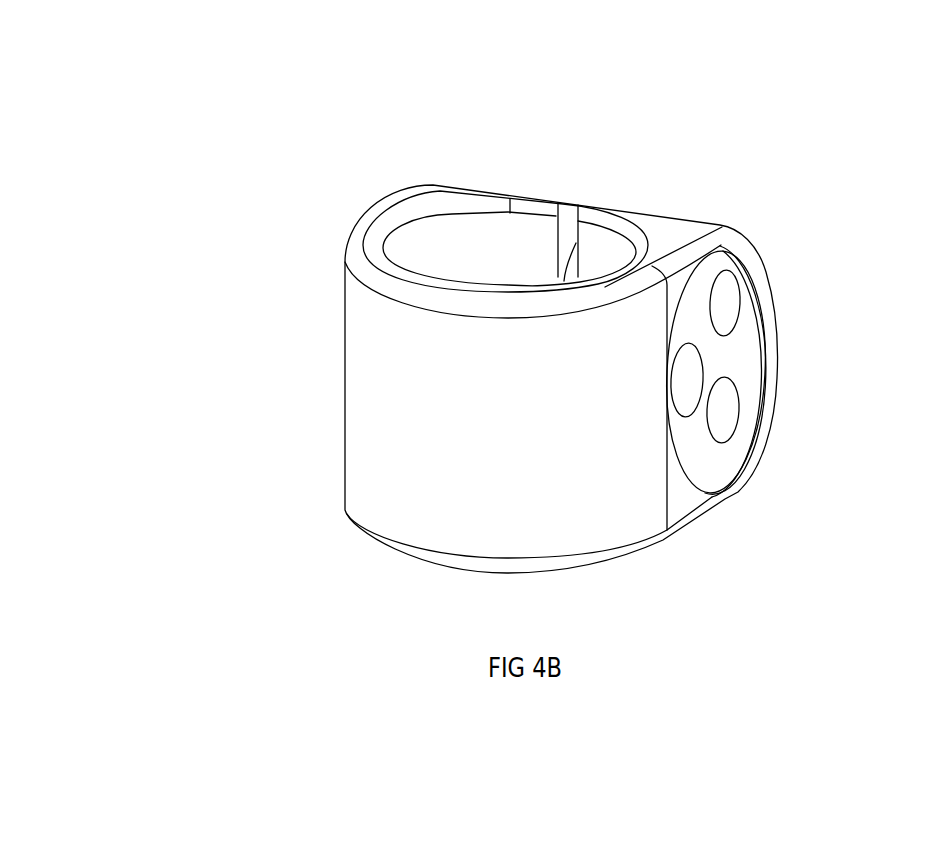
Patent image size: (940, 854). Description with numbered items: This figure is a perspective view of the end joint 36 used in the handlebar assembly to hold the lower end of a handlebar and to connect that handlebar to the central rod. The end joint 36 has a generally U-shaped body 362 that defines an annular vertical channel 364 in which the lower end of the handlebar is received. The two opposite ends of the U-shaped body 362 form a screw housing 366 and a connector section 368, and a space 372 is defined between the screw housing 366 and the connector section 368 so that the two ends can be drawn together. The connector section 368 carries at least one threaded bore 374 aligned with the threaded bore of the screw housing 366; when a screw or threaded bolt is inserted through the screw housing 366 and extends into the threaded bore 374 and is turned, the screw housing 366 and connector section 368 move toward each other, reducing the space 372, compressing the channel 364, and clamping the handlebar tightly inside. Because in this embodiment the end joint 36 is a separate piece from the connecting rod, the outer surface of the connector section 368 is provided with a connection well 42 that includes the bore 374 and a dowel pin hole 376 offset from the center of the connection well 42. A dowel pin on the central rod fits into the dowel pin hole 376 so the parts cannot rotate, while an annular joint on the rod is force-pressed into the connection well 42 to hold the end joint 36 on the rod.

The end joint 36 is at (860, 85).
The U-shaped body 362 is at (395, 292).
The annular vertical channel 364 is at (494, 228).
The screw housing 366 is at (415, 200).
The connector section 368 is at (680, 238).
The space 372 is at (572, 208).
The threaded bore 374 is at (728, 297).
The dowel pin hole 376 is at (685, 388).
The connection well 42 is at (742, 348).